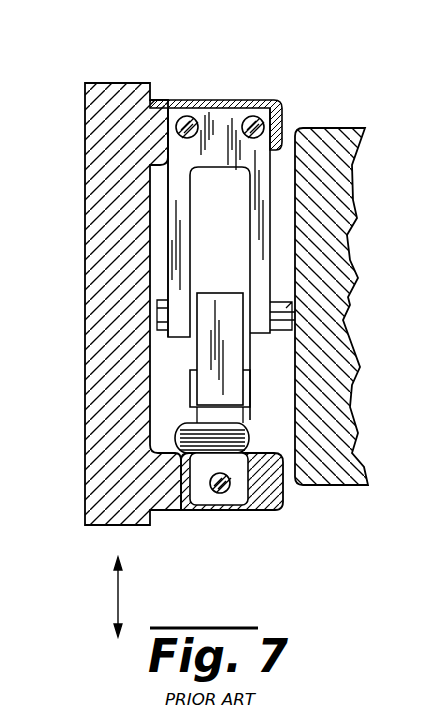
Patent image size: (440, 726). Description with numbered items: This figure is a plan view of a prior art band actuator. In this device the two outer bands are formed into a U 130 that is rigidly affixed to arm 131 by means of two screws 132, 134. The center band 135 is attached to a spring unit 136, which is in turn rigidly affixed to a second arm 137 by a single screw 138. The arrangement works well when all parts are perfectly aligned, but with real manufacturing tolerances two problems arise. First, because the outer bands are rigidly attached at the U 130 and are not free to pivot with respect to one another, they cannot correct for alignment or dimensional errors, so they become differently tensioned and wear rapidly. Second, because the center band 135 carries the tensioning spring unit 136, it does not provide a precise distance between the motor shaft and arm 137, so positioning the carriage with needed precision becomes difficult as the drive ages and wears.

The U 130 is at (180, 175).
The arm 131 is at (218, 100).
The screw 132 is at (180, 117).
The screw 134 is at (250, 115).
The center band 135 is at (207, 356).
The spring unit 136 is at (203, 467).
The arm 137 is at (267, 490).
The screw 138 is at (230, 490).